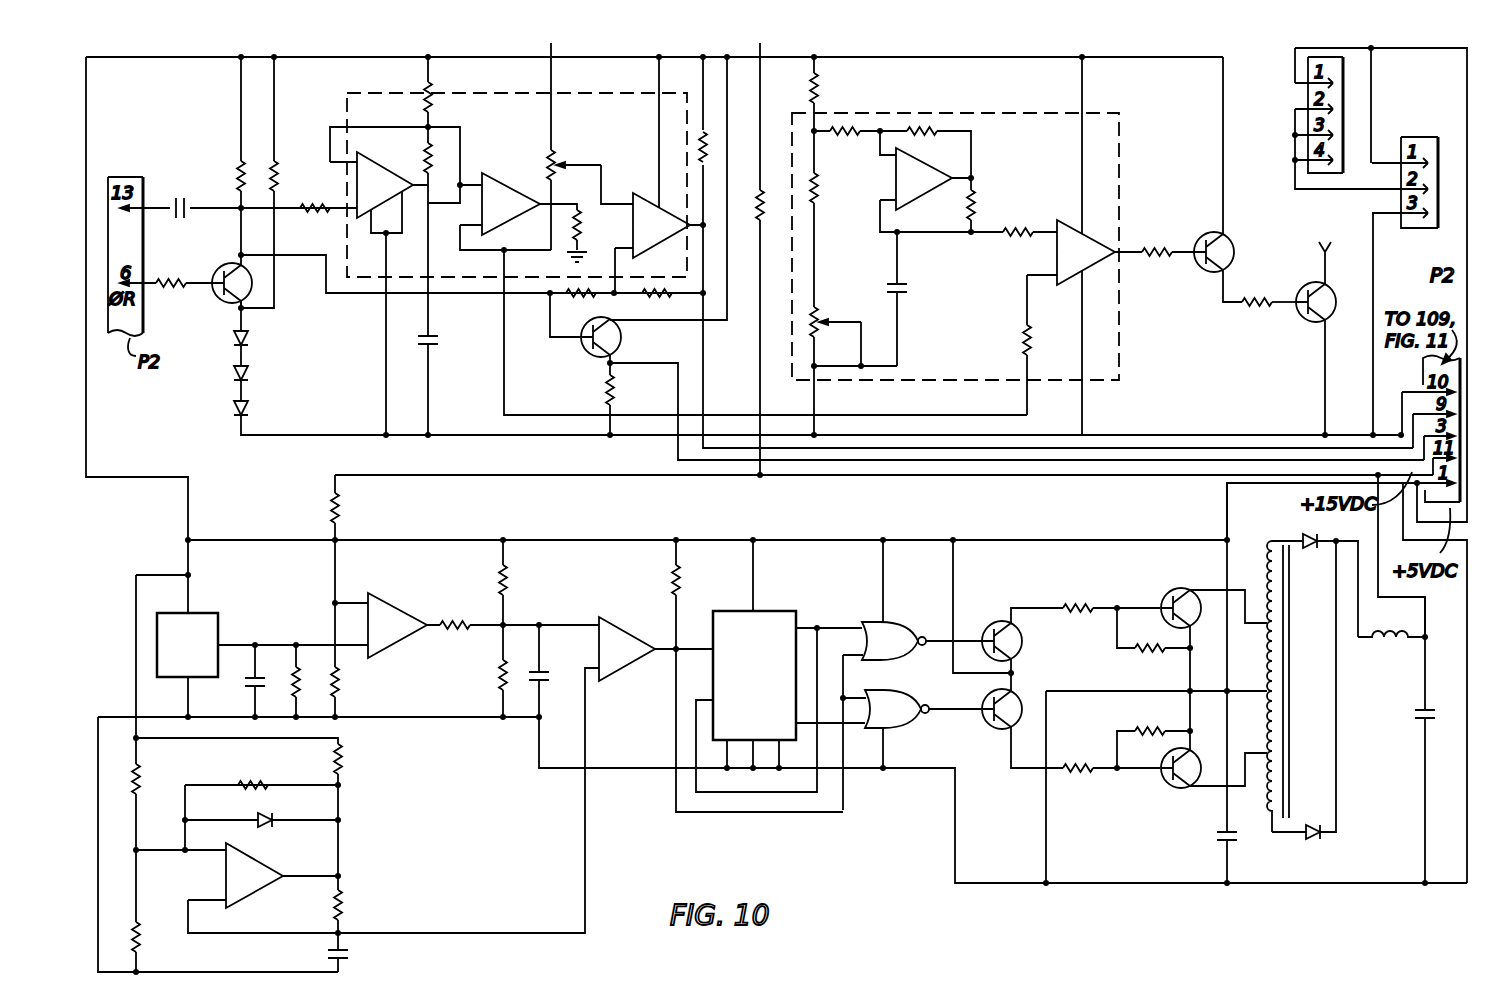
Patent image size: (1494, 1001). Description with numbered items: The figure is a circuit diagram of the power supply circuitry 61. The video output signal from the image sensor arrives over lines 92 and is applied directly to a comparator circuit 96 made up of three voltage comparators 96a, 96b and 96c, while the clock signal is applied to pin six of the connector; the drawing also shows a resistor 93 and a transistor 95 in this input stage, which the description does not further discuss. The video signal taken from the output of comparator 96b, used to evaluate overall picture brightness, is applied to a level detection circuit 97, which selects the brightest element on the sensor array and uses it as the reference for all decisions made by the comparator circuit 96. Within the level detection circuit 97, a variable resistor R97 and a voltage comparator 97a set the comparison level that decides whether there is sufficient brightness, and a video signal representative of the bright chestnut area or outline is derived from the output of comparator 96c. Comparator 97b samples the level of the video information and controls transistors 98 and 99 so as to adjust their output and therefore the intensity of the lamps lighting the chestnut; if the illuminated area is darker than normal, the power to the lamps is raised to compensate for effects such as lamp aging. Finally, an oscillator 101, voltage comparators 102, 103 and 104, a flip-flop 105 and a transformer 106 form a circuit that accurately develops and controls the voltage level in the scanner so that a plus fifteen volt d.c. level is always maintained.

The lines 92 is at (162, 202).
The resistor 93 is at (150, 282).
The transistor 95 is at (214, 300).
The comparator circuit 96 is at (678, 239).
The voltage comparator 96a is at (395, 170).
The voltage comparator 96b is at (515, 188).
The voltage comparator 96c is at (648, 196).
The level detection circuit 97 is at (993, 246).
The voltage comparator 97a is at (896, 172).
The comparator 97b is at (1072, 230).
The variable resistor R97 is at (822, 312).
The transistor 98 is at (1232, 240).
The transistor 99 is at (1306, 292).
The oscillator 101 is at (216, 622).
The voltage comparator 102 is at (412, 604).
The voltage comparator 103 is at (610, 626).
The voltage comparator 104 is at (264, 874).
The flip-flop 105 is at (776, 620).
The transformer 106 is at (1262, 582).
The power supply circuitry 61 is at (804, 819).